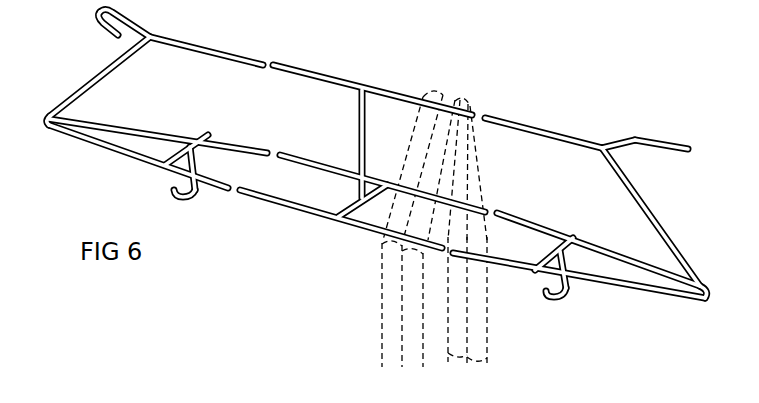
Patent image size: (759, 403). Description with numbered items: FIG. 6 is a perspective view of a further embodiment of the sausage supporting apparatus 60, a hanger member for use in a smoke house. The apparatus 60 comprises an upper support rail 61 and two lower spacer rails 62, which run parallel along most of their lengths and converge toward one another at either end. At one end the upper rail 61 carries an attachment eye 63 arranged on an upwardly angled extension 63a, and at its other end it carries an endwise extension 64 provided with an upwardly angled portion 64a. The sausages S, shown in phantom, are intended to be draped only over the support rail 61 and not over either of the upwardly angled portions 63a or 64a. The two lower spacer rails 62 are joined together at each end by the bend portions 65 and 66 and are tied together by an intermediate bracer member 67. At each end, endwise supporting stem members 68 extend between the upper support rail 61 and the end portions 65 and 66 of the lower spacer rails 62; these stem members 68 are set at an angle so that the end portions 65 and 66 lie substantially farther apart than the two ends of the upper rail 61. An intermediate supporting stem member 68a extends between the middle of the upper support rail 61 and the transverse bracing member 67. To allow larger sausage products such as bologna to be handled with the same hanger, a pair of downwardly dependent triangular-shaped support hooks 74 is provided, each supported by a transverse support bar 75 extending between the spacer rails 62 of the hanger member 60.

The sausage supporting apparatus 60 is at (104, 171).
The upper support rail 61 is at (287, 63).
The lower spacer rails 62 is at (318, 153).
The attachment eye 63 is at (93, 23).
The upwardly angled extension 63a is at (122, 18).
The endwise extension 64 is at (645, 146).
The upwardly angled portion 64a is at (618, 137).
The bend portion 65 is at (47, 115).
The bend portion 66 is at (703, 301).
The intermediate bracer member 67 is at (340, 206).
The endwise supporting stem members 68 is at (110, 77).
The intermediate supporting stem member 68a is at (358, 123).
The triangular-shaped support hooks 74 is at (188, 175).
The transverse support bar 75 is at (171, 150).
The sausages S is at (391, 305).